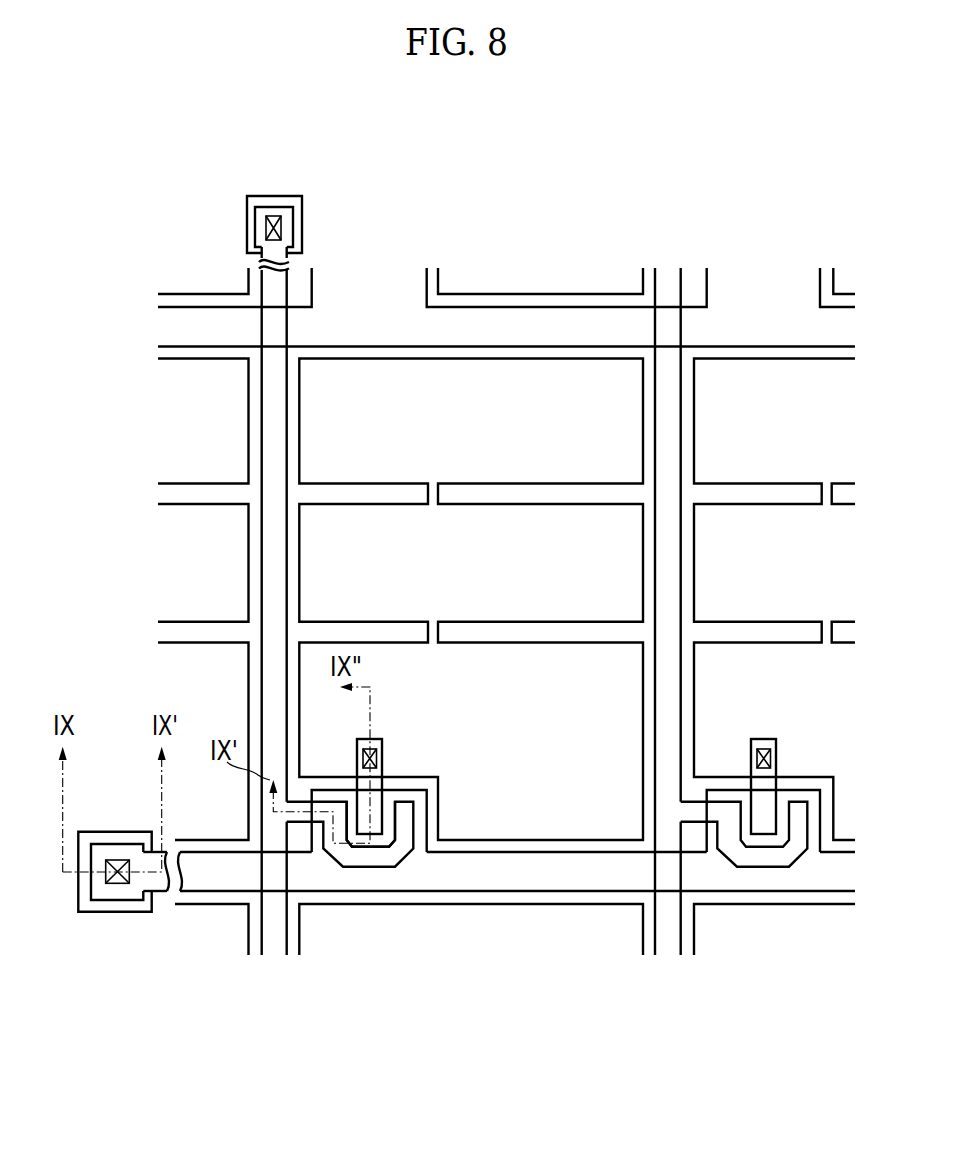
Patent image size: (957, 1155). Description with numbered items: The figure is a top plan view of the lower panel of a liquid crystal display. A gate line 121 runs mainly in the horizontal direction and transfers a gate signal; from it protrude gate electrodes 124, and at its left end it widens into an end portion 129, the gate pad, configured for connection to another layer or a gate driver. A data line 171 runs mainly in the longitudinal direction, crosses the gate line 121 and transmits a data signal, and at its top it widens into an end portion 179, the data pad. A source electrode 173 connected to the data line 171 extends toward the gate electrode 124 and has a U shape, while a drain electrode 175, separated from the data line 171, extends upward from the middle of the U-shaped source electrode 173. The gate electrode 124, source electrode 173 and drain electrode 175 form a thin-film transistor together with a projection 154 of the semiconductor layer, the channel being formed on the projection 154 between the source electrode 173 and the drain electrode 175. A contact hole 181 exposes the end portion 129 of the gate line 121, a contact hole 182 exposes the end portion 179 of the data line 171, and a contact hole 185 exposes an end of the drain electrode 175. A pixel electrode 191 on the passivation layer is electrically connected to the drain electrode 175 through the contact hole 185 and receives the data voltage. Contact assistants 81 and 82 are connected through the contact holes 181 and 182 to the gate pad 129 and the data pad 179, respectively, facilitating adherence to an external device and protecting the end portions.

The gate line 121 is at (518, 853).
The gate electrode 124 is at (427, 821).
The end portion of the gate line 129 is at (105, 844).
The projection 154 is at (390, 801).
The data line 171 is at (262, 575).
The source electrode 173 is at (372, 867).
The drain electrode 175 is at (383, 766).
The end portion of the data line 179 is at (293, 235).
The contact hole 181 is at (118, 883).
The contact hole 182 is at (266, 227).
The contact hole 185 is at (383, 751).
The pixel electrode 191 is at (299, 448).
The contact assistant 81 is at (128, 832).
The contact assistant 82 is at (302, 208).